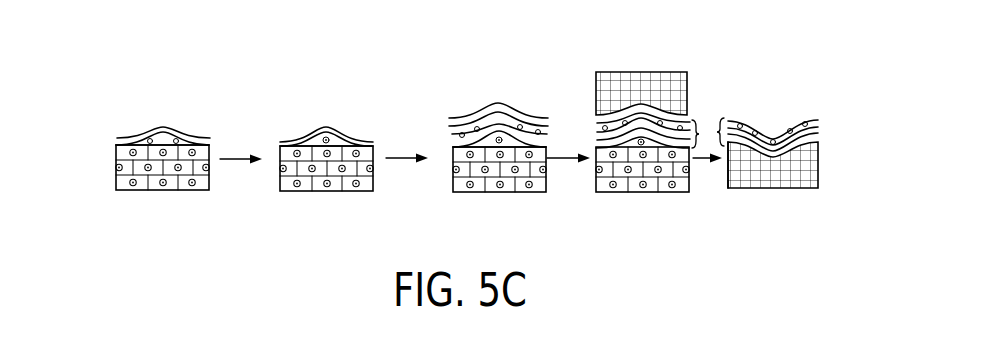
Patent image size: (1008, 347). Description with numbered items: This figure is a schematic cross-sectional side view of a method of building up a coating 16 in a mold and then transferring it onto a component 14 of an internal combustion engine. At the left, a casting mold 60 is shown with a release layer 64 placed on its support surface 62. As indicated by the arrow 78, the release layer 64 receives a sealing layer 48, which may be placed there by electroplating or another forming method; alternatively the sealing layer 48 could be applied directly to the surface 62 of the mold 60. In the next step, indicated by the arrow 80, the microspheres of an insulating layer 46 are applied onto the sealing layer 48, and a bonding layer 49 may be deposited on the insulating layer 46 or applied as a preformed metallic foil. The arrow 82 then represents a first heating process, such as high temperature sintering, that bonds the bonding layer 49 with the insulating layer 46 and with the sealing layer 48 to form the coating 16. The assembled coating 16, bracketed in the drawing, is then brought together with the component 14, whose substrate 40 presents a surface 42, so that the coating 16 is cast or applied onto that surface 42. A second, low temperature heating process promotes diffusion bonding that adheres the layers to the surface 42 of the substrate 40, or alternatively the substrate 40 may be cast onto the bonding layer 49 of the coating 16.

The component 14 is at (660, 57).
The coating 16 is at (708, 133).
The substrate 40 is at (617, 87).
The surface 42 is at (733, 148).
The insulating layer 46 is at (462, 138).
The sealing layer 48 is at (323, 128).
The bonding layer 49 is at (497, 105).
The casting mold 60 is at (148, 191).
The support surface 62 is at (118, 148).
The release layer 64 is at (172, 128).
The arrow 78 is at (240, 161).
The arrow 80 is at (404, 160).
The arrow 82 is at (564, 160).